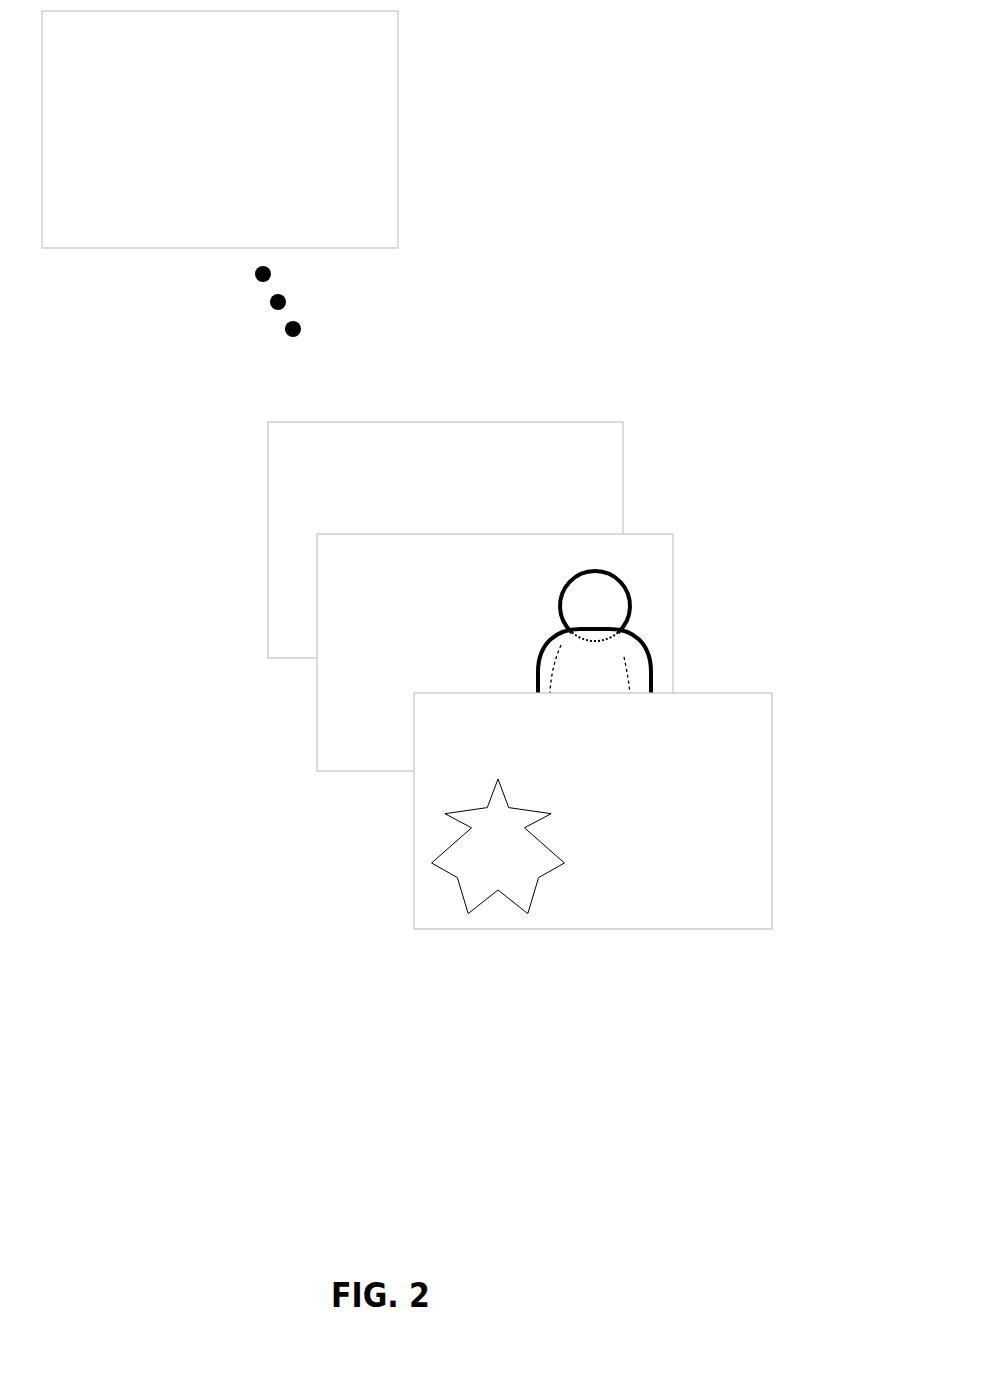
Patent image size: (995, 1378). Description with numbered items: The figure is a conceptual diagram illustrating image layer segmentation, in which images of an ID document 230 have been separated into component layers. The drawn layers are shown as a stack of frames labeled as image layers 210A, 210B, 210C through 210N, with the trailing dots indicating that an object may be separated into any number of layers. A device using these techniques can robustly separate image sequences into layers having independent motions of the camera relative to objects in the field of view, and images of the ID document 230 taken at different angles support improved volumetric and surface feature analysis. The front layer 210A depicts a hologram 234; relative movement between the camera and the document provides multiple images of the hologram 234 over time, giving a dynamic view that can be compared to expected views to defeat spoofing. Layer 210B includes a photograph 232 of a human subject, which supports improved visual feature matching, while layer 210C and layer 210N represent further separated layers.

The image layer 210N is at (220, 129).
The image layer 210C is at (445, 540).
The image layer 210B is at (495, 652).
The image layer 210A is at (593, 811).
The ID document 230 is at (676, 142).
The photograph 232 is at (656, 656).
The hologram 234 is at (494, 922).